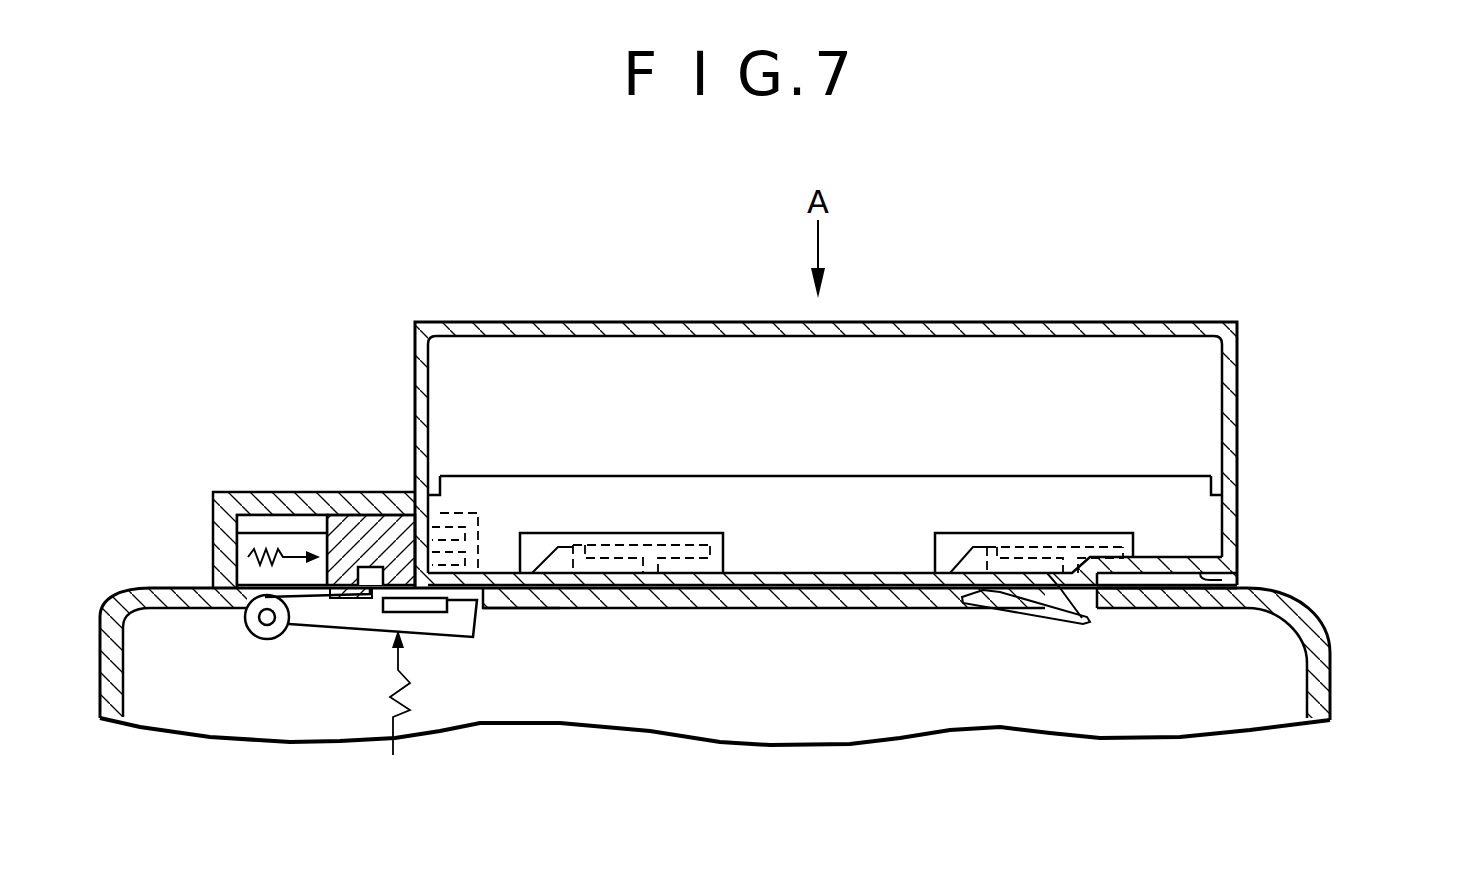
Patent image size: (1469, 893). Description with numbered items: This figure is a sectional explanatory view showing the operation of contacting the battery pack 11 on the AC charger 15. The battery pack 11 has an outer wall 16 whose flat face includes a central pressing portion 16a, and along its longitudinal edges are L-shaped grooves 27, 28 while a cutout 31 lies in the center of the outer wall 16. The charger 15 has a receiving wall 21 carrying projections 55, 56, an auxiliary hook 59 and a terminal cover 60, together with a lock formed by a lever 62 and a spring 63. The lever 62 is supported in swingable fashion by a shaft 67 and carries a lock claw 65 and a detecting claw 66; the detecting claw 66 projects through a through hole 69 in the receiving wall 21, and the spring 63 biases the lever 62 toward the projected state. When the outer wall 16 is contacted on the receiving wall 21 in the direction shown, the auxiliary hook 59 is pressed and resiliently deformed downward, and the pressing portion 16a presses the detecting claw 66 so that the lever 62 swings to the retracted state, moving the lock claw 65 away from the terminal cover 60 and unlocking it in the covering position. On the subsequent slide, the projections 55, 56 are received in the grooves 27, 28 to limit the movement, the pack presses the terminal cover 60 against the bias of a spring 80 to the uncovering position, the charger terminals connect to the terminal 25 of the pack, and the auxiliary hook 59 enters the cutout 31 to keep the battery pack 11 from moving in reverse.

The battery pack 11 is at (1000, 318).
The AC charger 15 is at (1345, 682).
The outer wall 16 is at (864, 588).
The pressing portion 16a is at (495, 574).
The receiving wall 21 is at (815, 568).
The terminal 25 is at (453, 523).
The groove 27 is at (683, 552).
The groove 28 is at (1085, 557).
The cutout 31 is at (1240, 574).
The projection 55 is at (610, 548).
The projection 56 is at (1022, 548).
The auxiliary hook 59 is at (1053, 607).
The terminal cover 60 is at (375, 528).
The lever 62 is at (427, 651).
The spring 63 is at (386, 686).
The lock claw 65 is at (367, 598).
The detecting claw 66 is at (465, 600).
The shaft 67 is at (257, 623).
The through hole 69 is at (543, 612).
The spring 80 is at (270, 552).